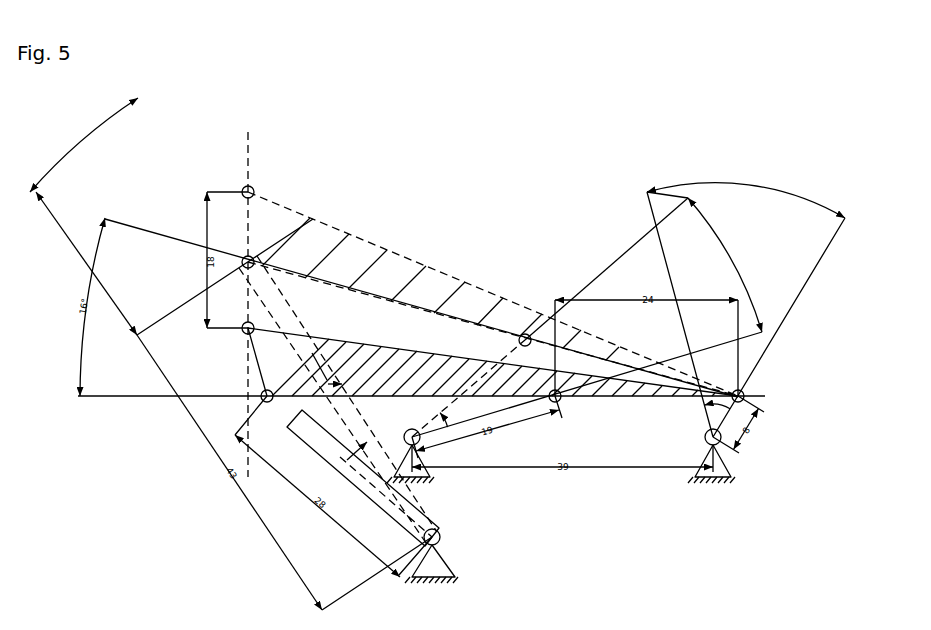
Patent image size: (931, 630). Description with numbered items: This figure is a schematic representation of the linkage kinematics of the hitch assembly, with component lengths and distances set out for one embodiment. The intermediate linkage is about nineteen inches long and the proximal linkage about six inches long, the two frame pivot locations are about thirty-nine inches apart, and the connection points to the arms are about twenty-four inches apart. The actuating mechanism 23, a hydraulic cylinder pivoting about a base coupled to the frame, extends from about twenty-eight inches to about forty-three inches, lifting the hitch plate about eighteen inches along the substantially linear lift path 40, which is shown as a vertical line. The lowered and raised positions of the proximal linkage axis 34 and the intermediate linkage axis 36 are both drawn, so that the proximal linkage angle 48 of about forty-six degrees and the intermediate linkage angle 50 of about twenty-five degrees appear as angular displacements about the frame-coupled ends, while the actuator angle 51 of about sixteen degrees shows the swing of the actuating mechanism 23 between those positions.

The actuating mechanism 23 is at (407, 505).
The proximal linkage axis 34 is at (662, 248).
The intermediate linkage axis 36 is at (662, 363).
The lift path 40 is at (248, 153).
The proximal linkage angle 48 is at (752, 175).
The intermediate linkage angle 50 is at (743, 253).
The actuator angle 51 is at (78, 132).